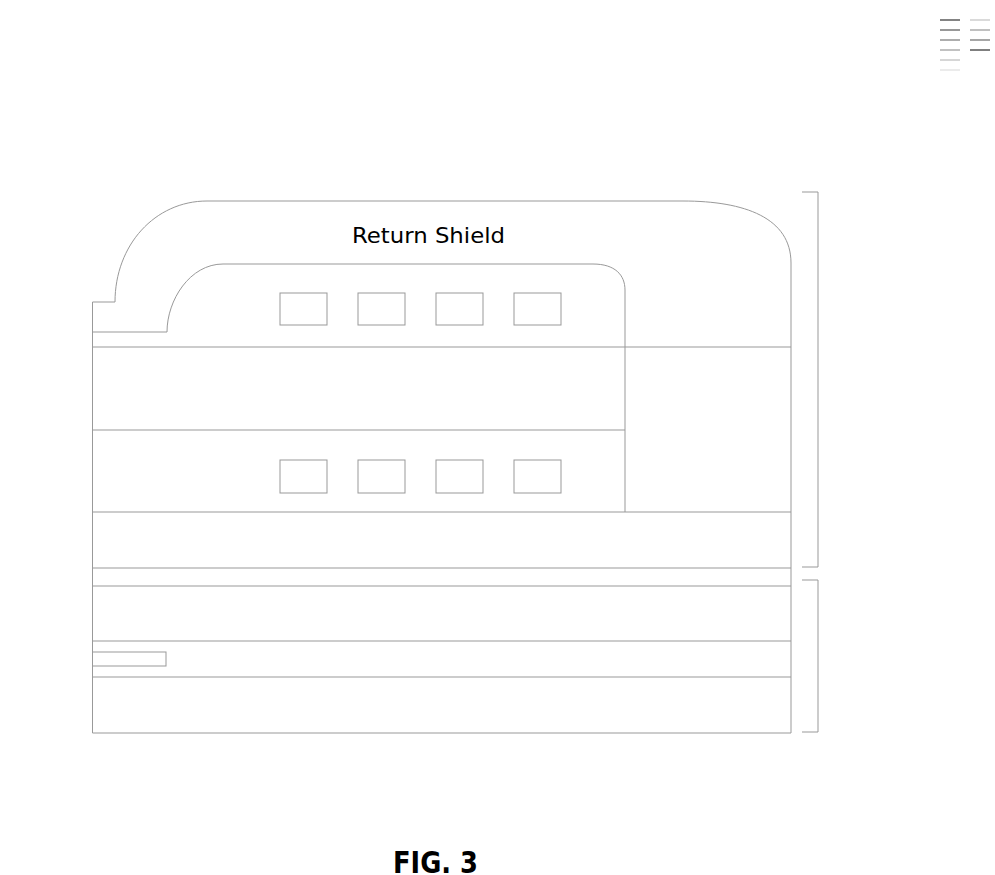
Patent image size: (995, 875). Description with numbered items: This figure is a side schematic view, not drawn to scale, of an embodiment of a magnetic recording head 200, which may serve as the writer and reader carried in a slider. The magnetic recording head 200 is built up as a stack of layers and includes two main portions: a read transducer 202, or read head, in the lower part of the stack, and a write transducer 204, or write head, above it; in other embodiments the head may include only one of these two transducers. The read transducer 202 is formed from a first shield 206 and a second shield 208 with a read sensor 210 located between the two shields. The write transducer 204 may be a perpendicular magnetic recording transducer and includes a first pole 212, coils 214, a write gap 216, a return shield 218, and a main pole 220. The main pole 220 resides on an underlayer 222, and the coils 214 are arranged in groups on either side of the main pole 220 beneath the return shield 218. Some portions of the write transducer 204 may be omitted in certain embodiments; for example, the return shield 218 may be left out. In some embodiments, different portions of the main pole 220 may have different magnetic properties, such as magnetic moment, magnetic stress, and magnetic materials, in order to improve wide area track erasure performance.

The magnetic recording head 200 is at (187, 92).
The read transducer 202 is at (817, 642).
The write transducer 204 is at (817, 277).
The first shield 206 is at (92, 700).
The second shield 208 is at (92, 613).
The read sensor 210 is at (130, 659).
The first pole 212 is at (92, 543).
The coils 214 is at (313, 282).
The write gap 216 is at (92, 338).
The return shield 218 is at (498, 200).
The main pole 220 is at (62, 392).
The underlayer 222 is at (92, 468).